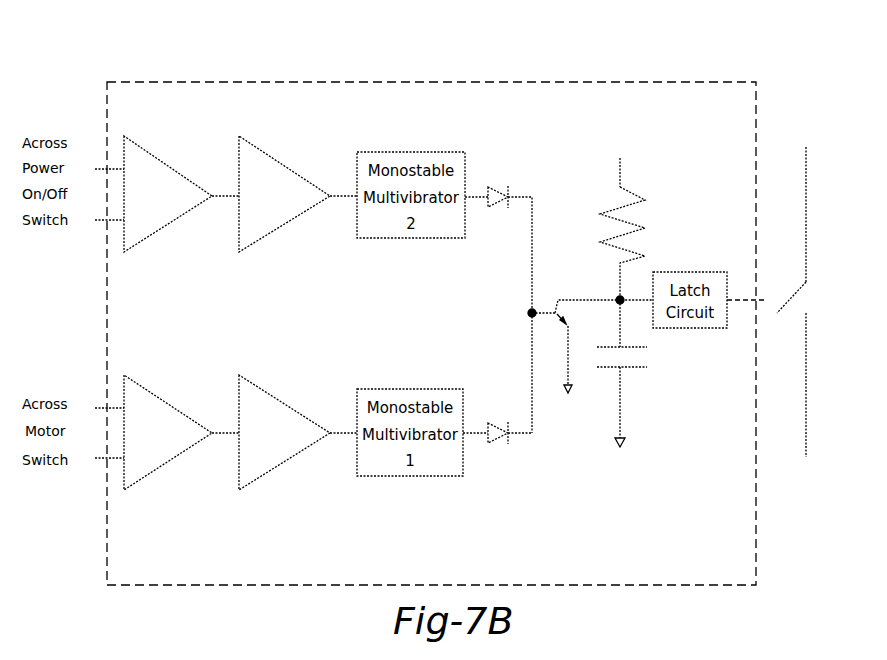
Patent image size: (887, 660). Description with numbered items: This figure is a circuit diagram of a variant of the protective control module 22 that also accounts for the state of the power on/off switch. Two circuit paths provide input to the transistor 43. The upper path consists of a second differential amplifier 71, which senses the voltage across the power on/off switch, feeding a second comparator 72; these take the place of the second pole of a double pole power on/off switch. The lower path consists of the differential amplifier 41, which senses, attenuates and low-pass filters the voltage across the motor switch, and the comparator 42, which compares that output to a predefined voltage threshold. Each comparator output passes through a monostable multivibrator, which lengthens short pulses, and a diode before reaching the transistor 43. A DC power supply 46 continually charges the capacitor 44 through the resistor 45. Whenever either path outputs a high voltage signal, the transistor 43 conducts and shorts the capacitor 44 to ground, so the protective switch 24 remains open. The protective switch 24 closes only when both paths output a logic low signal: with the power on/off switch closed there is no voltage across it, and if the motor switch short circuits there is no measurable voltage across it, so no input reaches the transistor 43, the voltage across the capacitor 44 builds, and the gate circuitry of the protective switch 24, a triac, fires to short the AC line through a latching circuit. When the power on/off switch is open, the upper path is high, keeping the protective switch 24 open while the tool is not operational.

The protective control module 22 is at (133, 82).
The second differential amplifier 71 is at (157, 160).
The second comparator 72 is at (284, 165).
The differential amplifier 41 is at (157, 398).
The comparator 42 is at (284, 405).
The transistor 43 is at (556, 298).
The capacitor 44 is at (650, 358).
The resistor 45 is at (642, 228).
The DC power supply 46 is at (640, 150).
The protective switch 24 is at (792, 298).